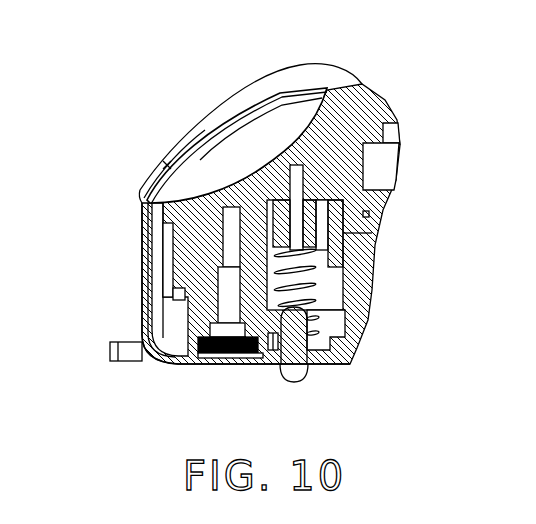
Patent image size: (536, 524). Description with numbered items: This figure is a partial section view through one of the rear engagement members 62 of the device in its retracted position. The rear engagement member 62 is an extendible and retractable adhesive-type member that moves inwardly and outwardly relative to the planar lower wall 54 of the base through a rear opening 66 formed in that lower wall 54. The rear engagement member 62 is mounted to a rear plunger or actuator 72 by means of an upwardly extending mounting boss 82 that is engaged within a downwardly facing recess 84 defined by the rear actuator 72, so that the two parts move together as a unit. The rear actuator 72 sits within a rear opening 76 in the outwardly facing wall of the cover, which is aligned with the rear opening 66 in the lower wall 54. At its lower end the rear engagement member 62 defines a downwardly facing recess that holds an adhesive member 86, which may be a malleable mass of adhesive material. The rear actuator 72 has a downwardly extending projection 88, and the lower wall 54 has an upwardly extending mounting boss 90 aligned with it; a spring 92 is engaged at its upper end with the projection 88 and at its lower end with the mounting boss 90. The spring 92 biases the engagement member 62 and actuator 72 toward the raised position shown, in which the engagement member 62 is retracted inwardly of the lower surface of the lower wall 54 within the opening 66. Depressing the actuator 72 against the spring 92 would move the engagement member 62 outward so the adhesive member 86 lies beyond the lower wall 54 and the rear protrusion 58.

The lower wall 54 is at (330, 366).
The rear protrusion 58 is at (300, 382).
The rear engagement member 62 is at (186, 320).
The rear opening 66 is at (275, 352).
The rear actuator 72 is at (163, 165).
The rear opening 76 is at (333, 78).
The mounting boss 82 is at (230, 150).
The downwardly facing recess 84 is at (208, 252).
The adhesive member 86 is at (210, 358).
The projection 88 is at (360, 232).
The mounting boss 90 is at (307, 317).
The spring 92 is at (313, 291).